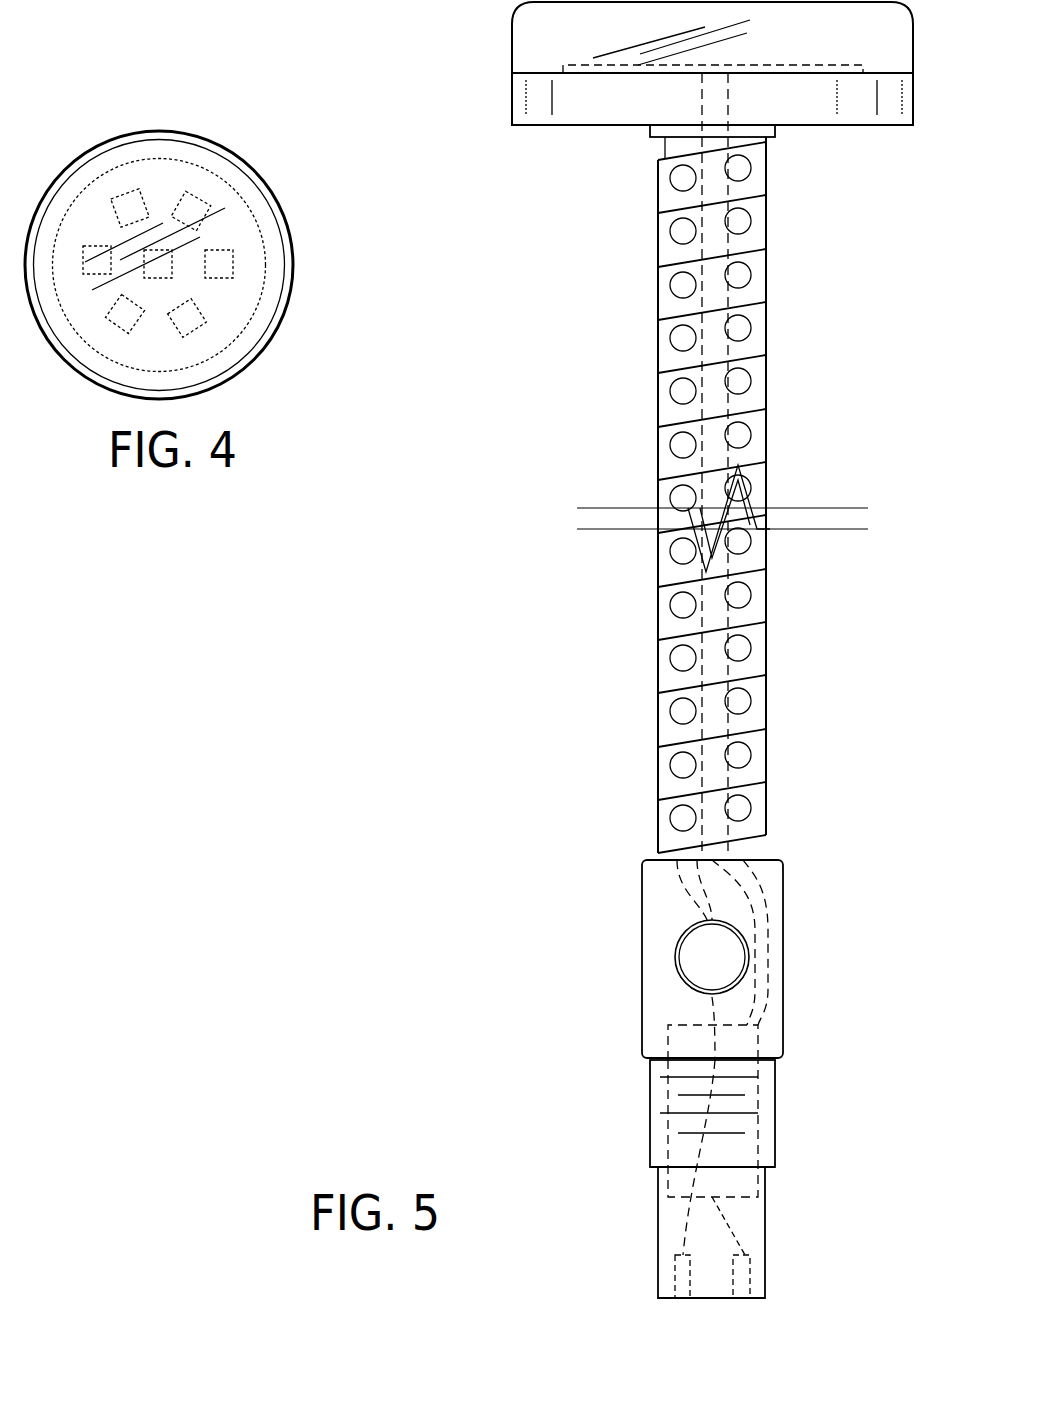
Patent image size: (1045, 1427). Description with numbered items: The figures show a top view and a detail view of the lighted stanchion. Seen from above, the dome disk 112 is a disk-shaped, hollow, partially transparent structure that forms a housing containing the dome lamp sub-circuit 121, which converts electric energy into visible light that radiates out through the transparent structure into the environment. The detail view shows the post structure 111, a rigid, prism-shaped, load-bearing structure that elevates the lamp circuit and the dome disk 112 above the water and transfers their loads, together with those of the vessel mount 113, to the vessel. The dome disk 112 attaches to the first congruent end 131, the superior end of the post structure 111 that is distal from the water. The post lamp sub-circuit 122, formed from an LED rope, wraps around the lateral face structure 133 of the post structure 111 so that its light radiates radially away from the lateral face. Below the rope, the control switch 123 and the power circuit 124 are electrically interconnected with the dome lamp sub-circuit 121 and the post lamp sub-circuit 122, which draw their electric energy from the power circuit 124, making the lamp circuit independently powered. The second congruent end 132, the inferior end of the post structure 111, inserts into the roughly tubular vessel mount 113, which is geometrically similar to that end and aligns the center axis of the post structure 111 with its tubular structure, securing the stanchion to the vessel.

In FIG. 5, the post structure 111 is at (768, 1105).
In FIG. 4, the dome disk 112 is at (295, 260).
In FIG. 5, the dome disk 112 is at (890, 102).
In FIG. 5, the vessel mount 113 is at (765, 1233).
In FIG. 4, the dome lamp sub-circuit 121 is at (168, 258).
In FIG. 5, the post lamp sub-circuit 122 is at (766, 575).
In FIG. 5, the control switch 123 is at (720, 953).
In FIG. 5, the power circuit 124 is at (718, 1255).
In FIG. 5, the first congruent end 131 is at (665, 143).
In FIG. 5, the second congruent end 132 is at (650, 1170).
In FIG. 5, the lateral face structure 133 is at (775, 850).